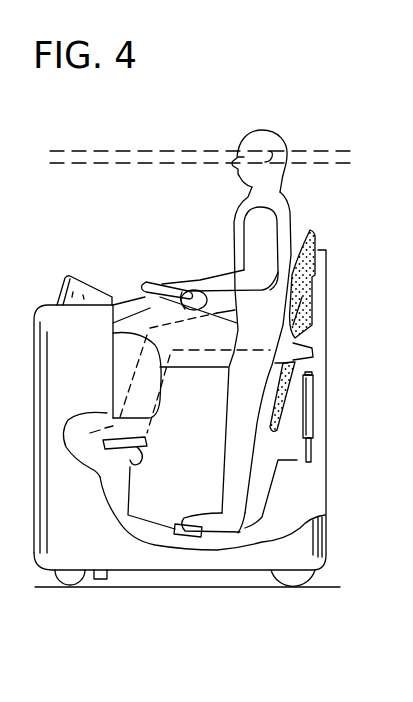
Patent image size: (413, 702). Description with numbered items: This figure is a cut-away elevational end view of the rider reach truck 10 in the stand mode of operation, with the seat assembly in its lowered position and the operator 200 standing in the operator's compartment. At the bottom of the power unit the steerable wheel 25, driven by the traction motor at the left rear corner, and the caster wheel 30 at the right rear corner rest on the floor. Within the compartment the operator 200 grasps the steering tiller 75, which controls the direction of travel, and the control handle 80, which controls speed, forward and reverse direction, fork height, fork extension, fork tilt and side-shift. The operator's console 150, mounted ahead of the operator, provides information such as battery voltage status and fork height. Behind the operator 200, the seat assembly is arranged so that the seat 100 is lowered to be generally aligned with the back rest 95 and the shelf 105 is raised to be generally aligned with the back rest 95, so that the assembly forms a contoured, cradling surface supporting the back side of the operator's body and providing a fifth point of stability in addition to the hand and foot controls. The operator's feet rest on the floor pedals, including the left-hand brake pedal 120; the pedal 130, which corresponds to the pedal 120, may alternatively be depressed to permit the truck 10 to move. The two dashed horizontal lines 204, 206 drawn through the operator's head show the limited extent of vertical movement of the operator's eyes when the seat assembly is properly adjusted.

The rider reach truck 10 is at (315, 493).
The steerable wheel 25 is at (73, 588).
The caster wheel 30 is at (307, 588).
The steering tiller 75 is at (148, 288).
The control handle 80 is at (193, 290).
The back rest 95 is at (310, 286).
The seat 100 is at (288, 398).
The shelf 105 is at (305, 337).
The left-hand pedal 120 is at (186, 538).
The pedal 130 is at (137, 450).
The operator's console 150 is at (87, 285).
The operator 200 is at (290, 135).
The dashed horizontal line 204 is at (118, 150).
The dashed horizontal line 206 is at (88, 164).